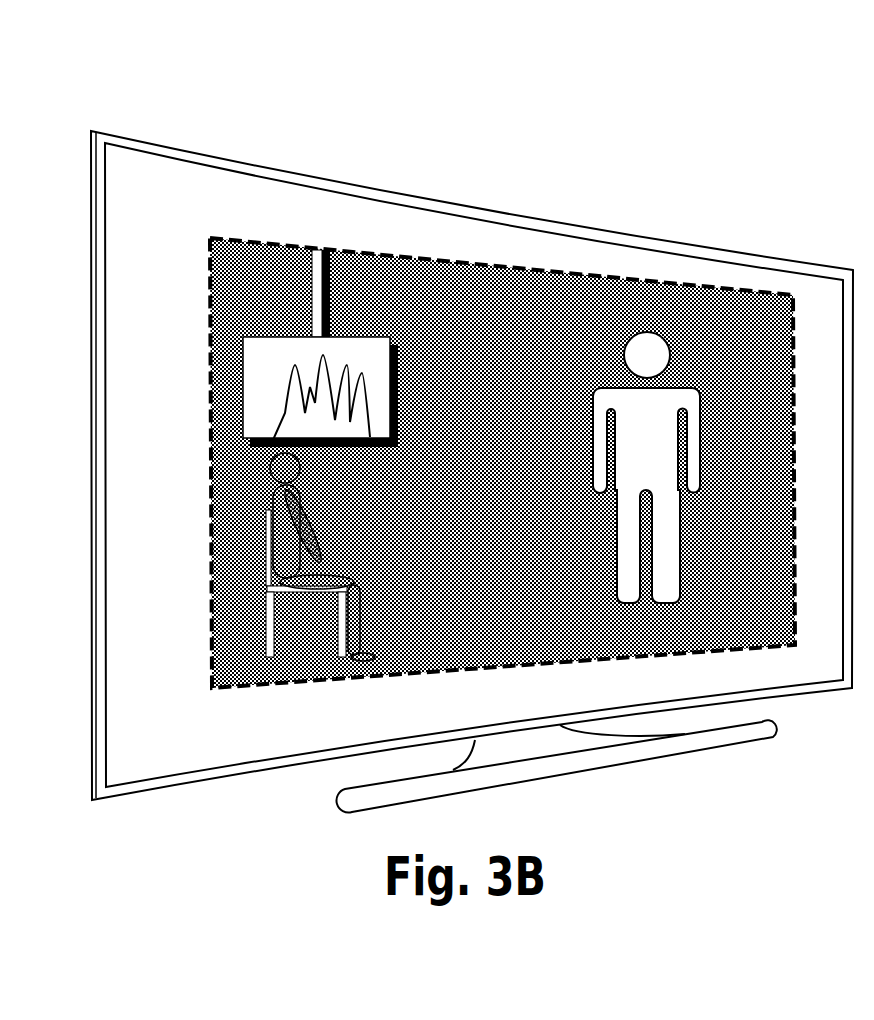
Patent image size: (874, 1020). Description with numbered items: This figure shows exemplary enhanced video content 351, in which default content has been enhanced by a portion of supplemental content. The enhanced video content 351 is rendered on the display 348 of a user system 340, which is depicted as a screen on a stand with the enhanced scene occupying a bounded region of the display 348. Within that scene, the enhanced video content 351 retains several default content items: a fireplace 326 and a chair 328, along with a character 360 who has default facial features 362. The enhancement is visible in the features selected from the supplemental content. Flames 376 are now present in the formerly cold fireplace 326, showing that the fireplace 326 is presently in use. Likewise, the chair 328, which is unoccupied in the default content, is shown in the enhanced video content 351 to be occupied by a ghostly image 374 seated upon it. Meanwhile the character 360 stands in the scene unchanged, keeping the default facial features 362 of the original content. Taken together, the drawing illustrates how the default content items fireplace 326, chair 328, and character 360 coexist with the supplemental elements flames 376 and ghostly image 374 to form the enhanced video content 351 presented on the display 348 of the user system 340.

The user system 340 is at (742, 103).
The display 348 is at (232, 215).
The enhanced video content 351 is at (452, 378).
The fireplace 326 is at (373, 337).
The flames 376 is at (293, 387).
The ghostly image 374 is at (300, 498).
The chair 328 is at (322, 595).
The character 360 is at (698, 427).
The default facial features 362 is at (670, 350).